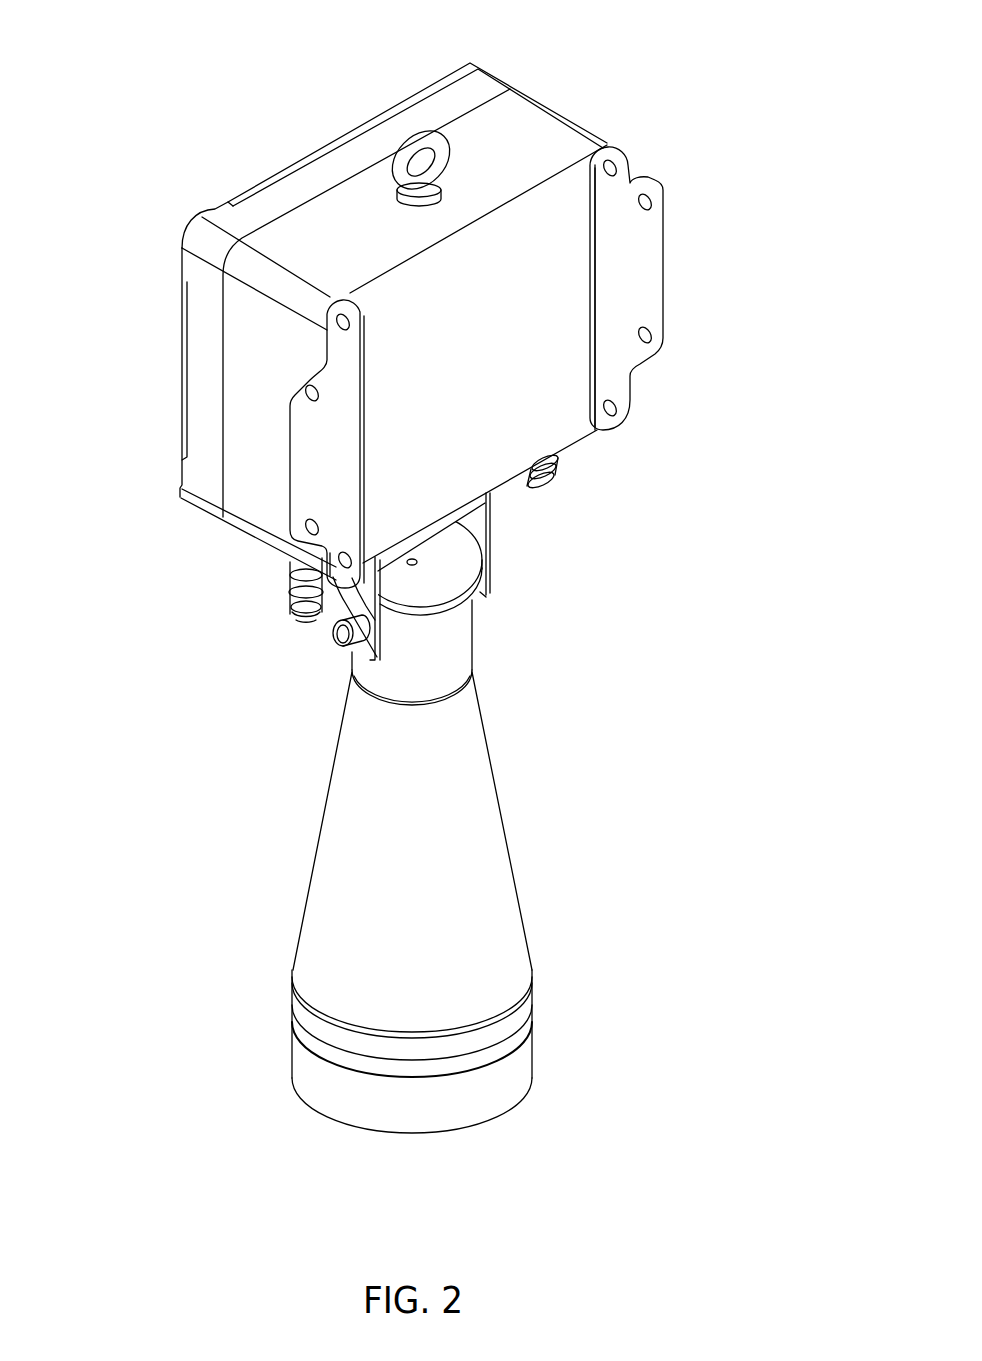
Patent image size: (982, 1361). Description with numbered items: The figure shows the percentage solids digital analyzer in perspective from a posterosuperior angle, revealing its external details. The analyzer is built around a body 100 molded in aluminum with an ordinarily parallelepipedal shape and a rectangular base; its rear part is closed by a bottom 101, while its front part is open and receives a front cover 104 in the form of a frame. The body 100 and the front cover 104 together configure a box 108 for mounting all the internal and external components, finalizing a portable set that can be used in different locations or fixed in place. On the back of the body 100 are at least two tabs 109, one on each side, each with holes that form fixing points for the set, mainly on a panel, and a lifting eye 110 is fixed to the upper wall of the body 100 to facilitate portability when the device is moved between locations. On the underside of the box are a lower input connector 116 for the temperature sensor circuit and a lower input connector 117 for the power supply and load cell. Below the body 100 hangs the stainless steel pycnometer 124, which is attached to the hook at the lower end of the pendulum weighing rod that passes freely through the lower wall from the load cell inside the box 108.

The body 100 is at (255, 535).
The bottom 101 is at (512, 402).
The front cover 104 is at (225, 220).
The box 108 is at (556, 96).
The tabs 109 is at (627, 275).
The lifting eye 110 is at (407, 155).
The lower input connector 116 is at (543, 487).
The lower input connector 117 is at (300, 587).
The stainless steel pycnometer 124 is at (300, 843).